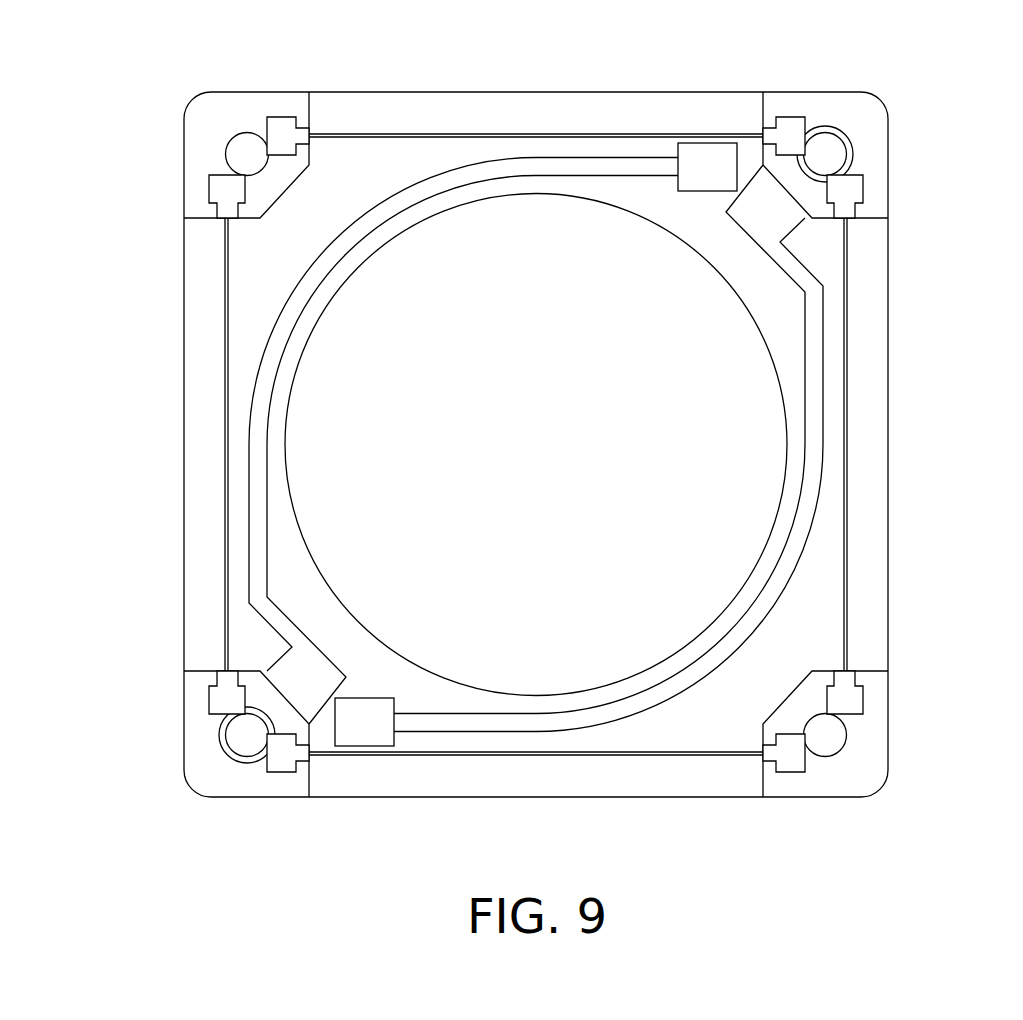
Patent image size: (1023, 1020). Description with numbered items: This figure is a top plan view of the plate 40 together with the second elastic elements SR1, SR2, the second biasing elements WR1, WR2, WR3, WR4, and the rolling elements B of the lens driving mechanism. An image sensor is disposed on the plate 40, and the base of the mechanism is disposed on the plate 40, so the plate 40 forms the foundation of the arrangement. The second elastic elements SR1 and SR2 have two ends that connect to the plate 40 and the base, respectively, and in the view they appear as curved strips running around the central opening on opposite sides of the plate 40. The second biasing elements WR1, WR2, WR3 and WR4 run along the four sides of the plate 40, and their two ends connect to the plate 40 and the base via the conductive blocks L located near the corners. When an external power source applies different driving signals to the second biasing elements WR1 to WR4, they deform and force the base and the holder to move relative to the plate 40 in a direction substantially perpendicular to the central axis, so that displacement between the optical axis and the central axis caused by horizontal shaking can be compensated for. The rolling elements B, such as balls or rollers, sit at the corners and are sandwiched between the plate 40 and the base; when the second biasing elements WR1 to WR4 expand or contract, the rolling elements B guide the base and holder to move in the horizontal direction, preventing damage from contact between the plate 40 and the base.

The plate 40 is at (866, 562).
The rolling elements B is at (247, 155).
The conductive blocks L is at (281, 135).
The second biasing element WR1 is at (537, 755).
The second biasing element WR2 is at (848, 444).
The second biasing element WR3 is at (536, 134).
The second biasing element WR4 is at (226, 445).
The second elastic element SR1 is at (815, 327).
The second elastic element SR2 is at (257, 563).